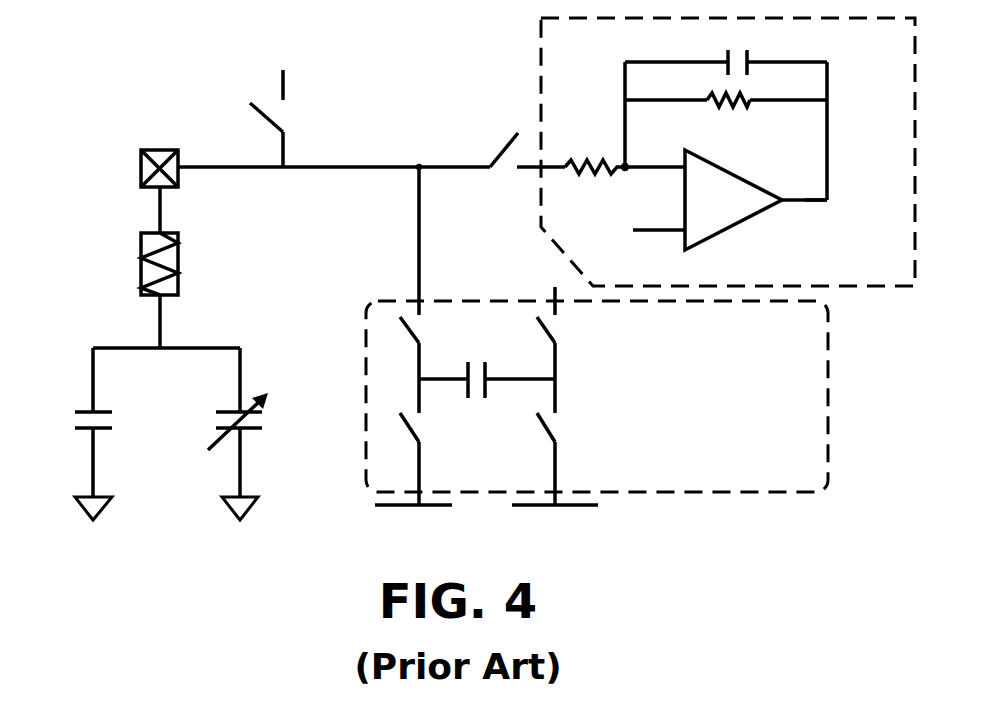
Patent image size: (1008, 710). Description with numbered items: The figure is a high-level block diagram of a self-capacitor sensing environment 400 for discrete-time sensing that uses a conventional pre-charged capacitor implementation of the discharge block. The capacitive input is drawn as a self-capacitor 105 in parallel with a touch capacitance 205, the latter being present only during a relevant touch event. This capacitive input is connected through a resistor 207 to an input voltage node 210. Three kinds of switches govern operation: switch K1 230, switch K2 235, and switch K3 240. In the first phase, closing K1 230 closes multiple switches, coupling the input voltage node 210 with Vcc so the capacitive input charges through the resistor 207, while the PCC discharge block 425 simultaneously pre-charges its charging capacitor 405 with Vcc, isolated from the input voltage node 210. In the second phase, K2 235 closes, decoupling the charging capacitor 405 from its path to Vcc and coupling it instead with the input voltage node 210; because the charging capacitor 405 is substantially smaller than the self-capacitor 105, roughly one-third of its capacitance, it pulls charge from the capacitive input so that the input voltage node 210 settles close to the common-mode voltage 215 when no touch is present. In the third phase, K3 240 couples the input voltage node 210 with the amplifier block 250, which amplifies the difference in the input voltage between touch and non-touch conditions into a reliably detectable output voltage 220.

The self-capacitor sensing environment 400 is at (146, 50).
The self-capacitor 105 is at (51, 473).
The touch capacitance 205 is at (339, 492).
The resistor 207 is at (266, 279).
The input voltage node 210 is at (481, 162).
The common-mode voltage 215 is at (627, 274).
The output voltage 220 is at (892, 244).
The switch K1 230 is at (612, 376).
The switch K2 235 is at (619, 471).
The switch K3 240 is at (572, 119).
The amplifier block 250 is at (907, 54).
The charging capacitor 405 is at (534, 377).
The PCC discharge block 425 is at (780, 369).